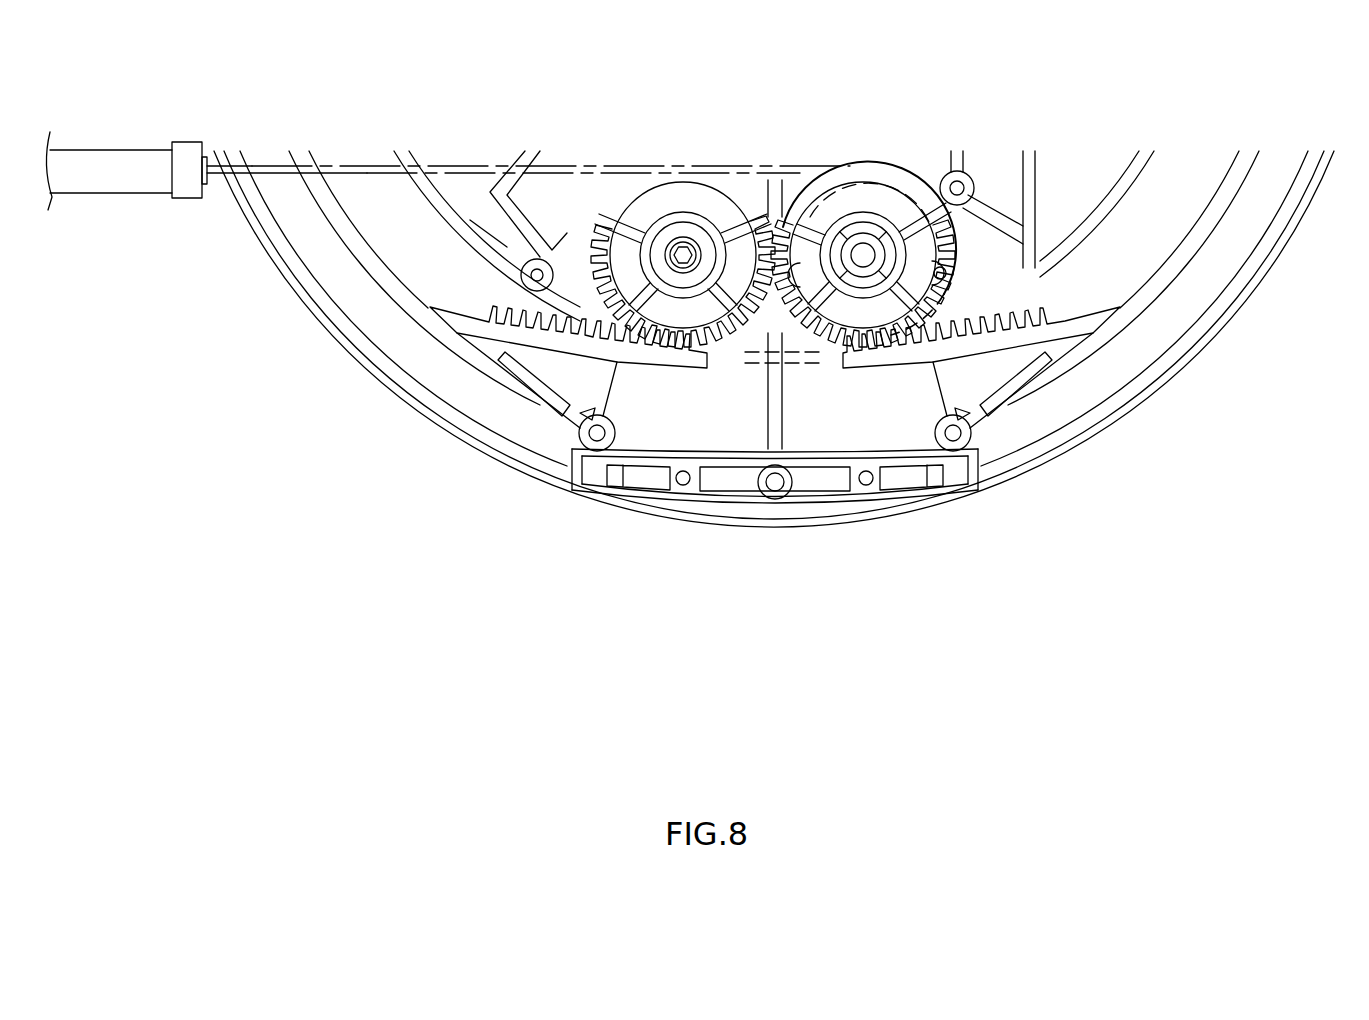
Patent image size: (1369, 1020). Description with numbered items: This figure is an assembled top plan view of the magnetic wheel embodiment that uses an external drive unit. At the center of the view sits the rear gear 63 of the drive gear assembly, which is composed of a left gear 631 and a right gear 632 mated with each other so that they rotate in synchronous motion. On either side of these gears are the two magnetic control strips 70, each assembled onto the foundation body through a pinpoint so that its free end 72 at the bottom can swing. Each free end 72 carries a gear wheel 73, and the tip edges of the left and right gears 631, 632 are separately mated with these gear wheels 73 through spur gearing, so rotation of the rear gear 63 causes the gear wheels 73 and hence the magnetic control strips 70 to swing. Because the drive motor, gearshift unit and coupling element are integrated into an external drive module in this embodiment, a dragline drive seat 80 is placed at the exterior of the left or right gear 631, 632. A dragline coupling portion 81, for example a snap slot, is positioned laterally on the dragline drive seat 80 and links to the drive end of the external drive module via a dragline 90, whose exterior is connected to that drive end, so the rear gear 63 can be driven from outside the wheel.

The rear gear 63 is at (773, 413).
The left gear 631 is at (720, 340).
The right gear 632 is at (820, 340).
The magnetic control strip 70 is at (340, 223).
The free end 72 is at (567, 432).
The gear wheel 73 is at (677, 347).
The dragline drive seat 80 is at (902, 165).
The dragline coupling portion 81 is at (1003, 188).
The dragline 90 is at (598, 163).